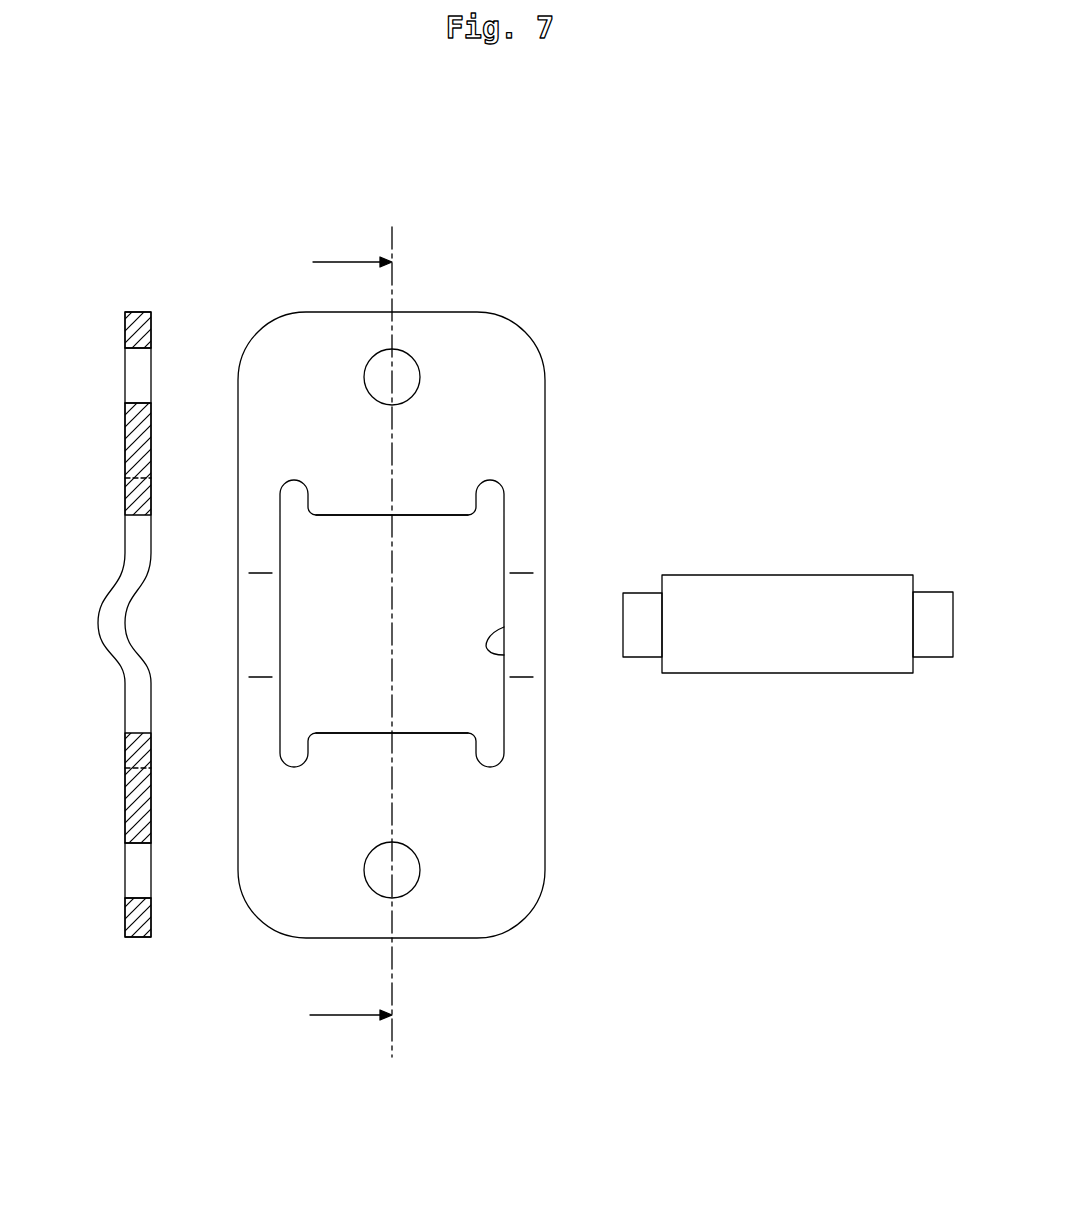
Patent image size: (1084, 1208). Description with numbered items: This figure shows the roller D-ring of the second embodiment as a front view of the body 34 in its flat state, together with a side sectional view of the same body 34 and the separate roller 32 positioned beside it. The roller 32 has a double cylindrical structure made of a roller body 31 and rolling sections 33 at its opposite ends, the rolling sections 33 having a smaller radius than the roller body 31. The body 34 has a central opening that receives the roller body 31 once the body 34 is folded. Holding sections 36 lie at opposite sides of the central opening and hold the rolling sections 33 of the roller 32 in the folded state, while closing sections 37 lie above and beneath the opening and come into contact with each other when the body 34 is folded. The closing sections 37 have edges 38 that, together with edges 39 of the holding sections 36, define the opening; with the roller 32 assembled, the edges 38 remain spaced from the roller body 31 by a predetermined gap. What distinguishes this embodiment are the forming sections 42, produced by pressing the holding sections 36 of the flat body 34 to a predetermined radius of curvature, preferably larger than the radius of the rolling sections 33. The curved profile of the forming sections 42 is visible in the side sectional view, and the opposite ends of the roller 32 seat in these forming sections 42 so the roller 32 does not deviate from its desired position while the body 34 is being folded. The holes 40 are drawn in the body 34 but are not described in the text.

The roller body 31 is at (817, 585).
The roller 32 is at (791, 562).
The rolling sections 33 is at (933, 603).
The body 34 is at (112, 318).
The holding sections 36 is at (238, 560).
The closing sections 37 is at (403, 437).
The edges 38 is at (137, 515).
The edges 39 is at (504, 655).
The fixing hole 40 is at (137, 375).
The forming sections 42 is at (110, 627).